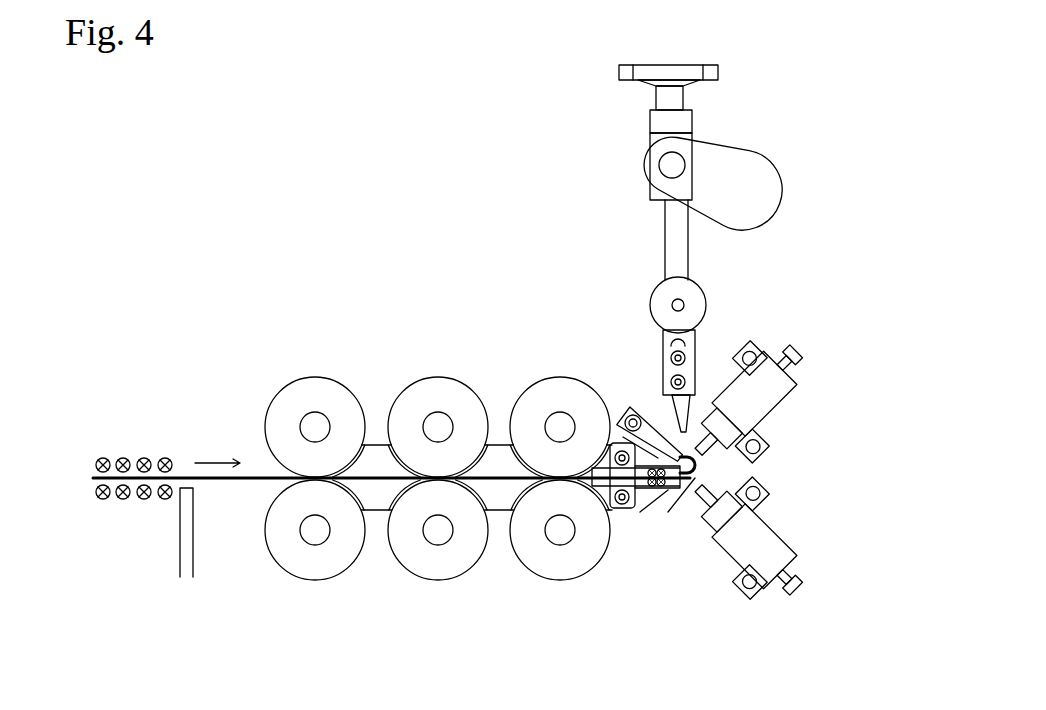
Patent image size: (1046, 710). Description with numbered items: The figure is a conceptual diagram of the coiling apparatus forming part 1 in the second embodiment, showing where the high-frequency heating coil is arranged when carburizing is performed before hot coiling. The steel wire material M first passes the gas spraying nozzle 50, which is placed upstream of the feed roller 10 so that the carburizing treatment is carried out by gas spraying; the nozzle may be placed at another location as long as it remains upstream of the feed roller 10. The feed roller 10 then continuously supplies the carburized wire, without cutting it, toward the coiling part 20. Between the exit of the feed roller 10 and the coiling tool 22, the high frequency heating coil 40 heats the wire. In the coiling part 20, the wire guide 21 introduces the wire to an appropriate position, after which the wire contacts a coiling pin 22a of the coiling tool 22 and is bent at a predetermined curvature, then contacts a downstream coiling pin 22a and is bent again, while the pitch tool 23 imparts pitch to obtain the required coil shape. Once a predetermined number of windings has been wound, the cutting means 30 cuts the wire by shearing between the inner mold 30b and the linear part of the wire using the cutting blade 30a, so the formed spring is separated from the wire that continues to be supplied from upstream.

The coiling apparatus forming part 1 is at (360, 626).
The feed roller 10 is at (609, 585).
The coiling part 20 is at (708, 596).
The wire guide 21 is at (662, 497).
The coiling tool 22 is at (804, 398).
The coiling pin 22a is at (696, 445).
The pitch tool 23 is at (633, 412).
The cutting means 30 is at (663, 346).
The cutting blade 30a is at (672, 402).
The inner mold 30b is at (690, 480).
The high frequency heating coil 40 is at (653, 500).
The nozzle 50 is at (187, 545).